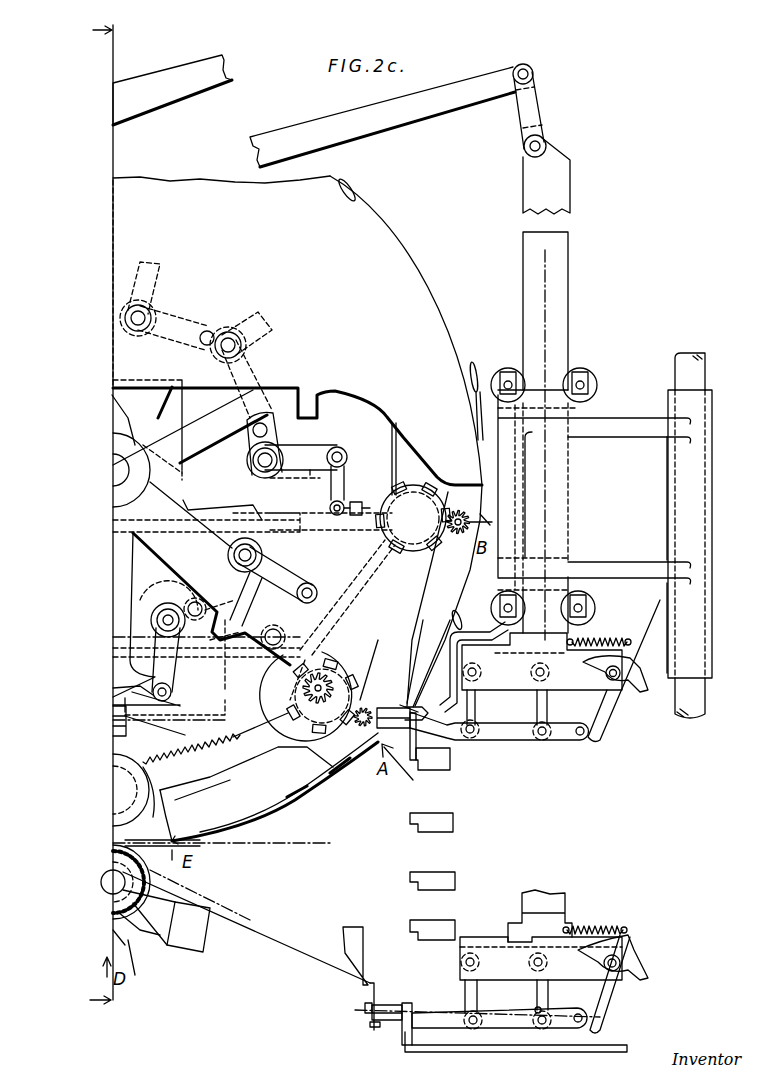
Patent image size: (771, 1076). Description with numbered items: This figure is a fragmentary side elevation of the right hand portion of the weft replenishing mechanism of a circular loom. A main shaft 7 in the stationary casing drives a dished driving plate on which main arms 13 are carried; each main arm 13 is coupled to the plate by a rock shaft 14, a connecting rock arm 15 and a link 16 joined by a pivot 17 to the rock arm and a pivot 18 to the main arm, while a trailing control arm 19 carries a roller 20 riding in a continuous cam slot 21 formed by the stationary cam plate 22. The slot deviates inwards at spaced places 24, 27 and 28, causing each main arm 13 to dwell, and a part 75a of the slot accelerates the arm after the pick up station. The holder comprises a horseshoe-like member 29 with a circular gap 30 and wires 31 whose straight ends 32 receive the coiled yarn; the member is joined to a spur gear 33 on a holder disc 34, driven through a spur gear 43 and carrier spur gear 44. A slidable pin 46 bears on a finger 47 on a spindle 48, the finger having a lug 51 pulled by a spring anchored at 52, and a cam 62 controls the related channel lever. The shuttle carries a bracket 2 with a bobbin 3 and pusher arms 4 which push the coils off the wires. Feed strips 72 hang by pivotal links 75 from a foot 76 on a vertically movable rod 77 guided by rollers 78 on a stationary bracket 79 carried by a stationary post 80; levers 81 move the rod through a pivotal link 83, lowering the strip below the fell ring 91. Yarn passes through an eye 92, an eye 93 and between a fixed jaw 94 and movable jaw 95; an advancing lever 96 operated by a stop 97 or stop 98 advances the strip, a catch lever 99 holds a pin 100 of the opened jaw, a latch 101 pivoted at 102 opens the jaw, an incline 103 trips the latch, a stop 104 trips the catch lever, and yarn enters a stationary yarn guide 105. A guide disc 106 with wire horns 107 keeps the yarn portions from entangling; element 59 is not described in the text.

The bracket 2 is at (114, 937).
The bobbin 3 is at (190, 937).
The radially projecting arms 4 is at (116, 523).
The main shaft 7 is at (144, 470).
The main arms 13 is at (297, 542).
The rock shaft 14 is at (235, 640).
The connecting rock arm 15 is at (175, 660).
The link 16 is at (226, 712).
The pivot 17 is at (172, 691).
The pivot 18 is at (205, 675).
The trailing control arm 19 is at (216, 610).
The roller 20 is at (228, 340).
The cam slot 21 is at (207, 331).
The stationary cam plate 22 is at (275, 410).
The deviation place of cam slot 24 is at (236, 612).
The deviation place of cam slot 27 is at (247, 459).
The deviation place of cam slot 28 is at (163, 605).
The horseshoe-like member 29 is at (143, 935).
The circular gap 30 is at (140, 900).
The wires 31 is at (153, 887).
The straight ends of wires 32 is at (221, 845).
The spur gear 33 is at (175, 838).
The holder disc 34 is at (165, 768).
The spur gear 43 is at (137, 795).
The carrier spur gear 44 is at (160, 798).
The slidable pin 46 is at (127, 730).
The finger 47 is at (240, 742).
The spindle 48 is at (190, 780).
The lug 51 is at (378, 642).
The spring anchorage 52 is at (290, 675).
The rack 59 is at (235, 738).
The cam 62 is at (157, 702).
The feed strips 72 is at (448, 1023).
The pivotal links 75 is at (537, 990).
The part of cam slot 75a is at (297, 490).
The foot 76 is at (545, 806).
The vertically movable rod 77 is at (547, 903).
The rollers 78 is at (595, 608).
The stationary bracket 79 is at (513, 467).
The stationary post 80 is at (687, 368).
The levers 81 is at (318, 128).
The pivotal link 83 is at (530, 112).
The fell ring 91 is at (353, 933).
The eye 92 is at (537, 1013).
The eye 93 is at (370, 1025).
The fixed jaw 94 is at (378, 1005).
The movable jaw 95 is at (365, 1008).
The advancing lever 96 is at (597, 1007).
The stop 97 is at (647, 692).
The stop 98 is at (593, 958).
The catch lever 99 is at (357, 1055).
The pin 100 is at (407, 1013).
The latch 101 is at (434, 713).
The pivot 102 is at (437, 637).
The incline 103 is at (418, 720).
The stop 104 is at (407, 1047).
The stationary yarn guide 105 is at (370, 985).
The guide disc 106 is at (398, 268).
The horns 107 is at (303, 800).